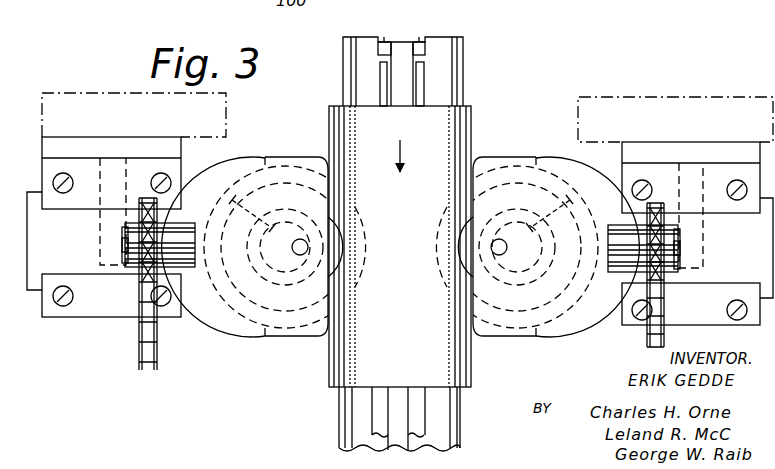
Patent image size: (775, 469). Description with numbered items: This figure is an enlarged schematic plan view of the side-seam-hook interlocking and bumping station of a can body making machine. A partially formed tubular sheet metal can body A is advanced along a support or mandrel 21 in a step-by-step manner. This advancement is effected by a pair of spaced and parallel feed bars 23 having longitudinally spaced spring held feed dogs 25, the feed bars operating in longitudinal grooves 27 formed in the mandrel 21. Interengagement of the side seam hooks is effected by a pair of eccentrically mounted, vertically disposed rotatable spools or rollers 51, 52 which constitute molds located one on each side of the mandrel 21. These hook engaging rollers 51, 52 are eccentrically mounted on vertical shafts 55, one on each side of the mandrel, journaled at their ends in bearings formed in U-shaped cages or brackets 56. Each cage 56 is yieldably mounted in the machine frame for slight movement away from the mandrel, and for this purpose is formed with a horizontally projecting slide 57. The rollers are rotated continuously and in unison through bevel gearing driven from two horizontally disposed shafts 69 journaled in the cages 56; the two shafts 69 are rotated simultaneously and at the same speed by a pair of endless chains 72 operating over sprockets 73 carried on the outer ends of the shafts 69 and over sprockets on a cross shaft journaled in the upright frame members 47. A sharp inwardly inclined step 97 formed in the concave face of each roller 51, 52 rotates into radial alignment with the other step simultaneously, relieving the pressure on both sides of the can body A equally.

The mandrel 21 is at (448, 99).
The feed bars 23 is at (383, 58).
The feed dogs 25 is at (382, 87).
The longitudinal grooves 27 is at (421, 38).
The can body A is at (462, 134).
The upright frame member 47 is at (62, 92).
The hook engaging roller 51 is at (287, 164).
The hook engaging roller 52 is at (521, 166).
The vertical shaft 55 is at (292, 247).
The cage 56 is at (221, 186).
The slide 57 is at (62, 256).
The horizontal shaft 69 is at (127, 240).
The endless chain 72 is at (138, 348).
The sprocket 73 is at (125, 257).
The step 97 is at (252, 208).